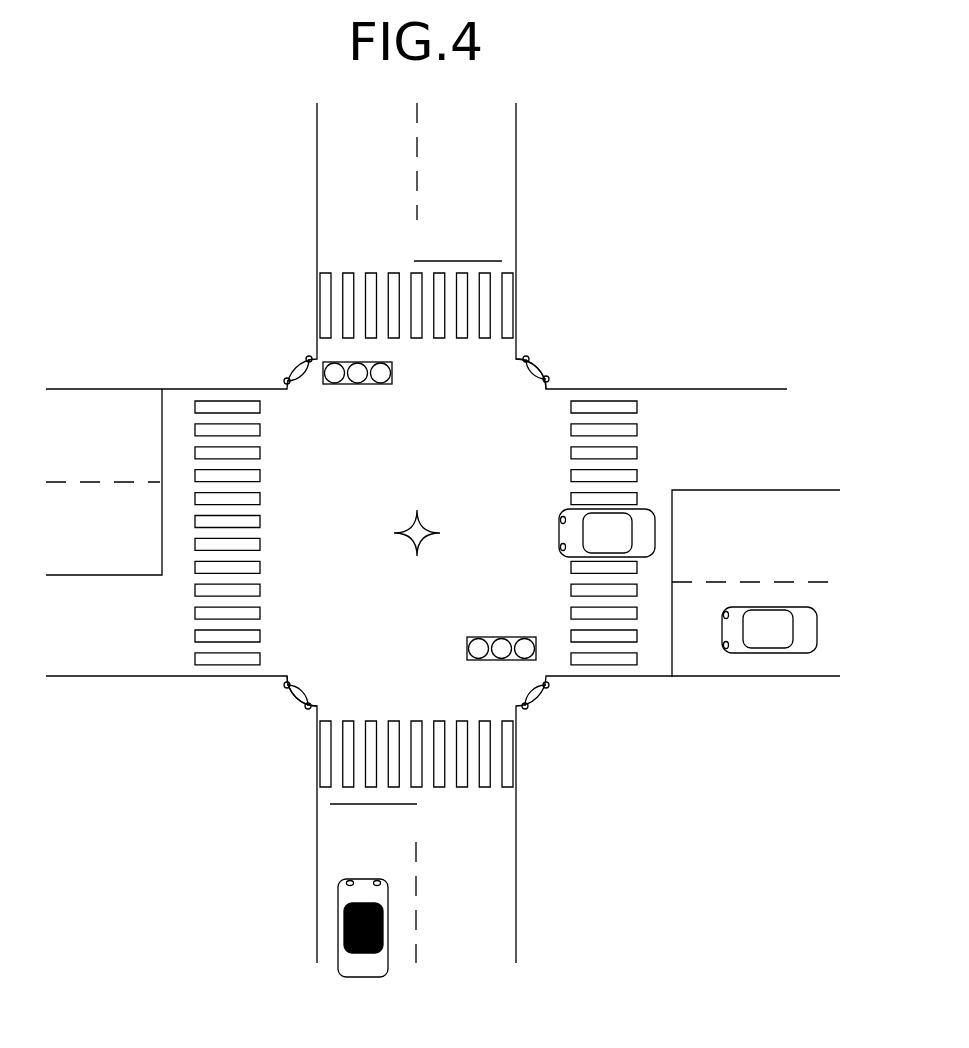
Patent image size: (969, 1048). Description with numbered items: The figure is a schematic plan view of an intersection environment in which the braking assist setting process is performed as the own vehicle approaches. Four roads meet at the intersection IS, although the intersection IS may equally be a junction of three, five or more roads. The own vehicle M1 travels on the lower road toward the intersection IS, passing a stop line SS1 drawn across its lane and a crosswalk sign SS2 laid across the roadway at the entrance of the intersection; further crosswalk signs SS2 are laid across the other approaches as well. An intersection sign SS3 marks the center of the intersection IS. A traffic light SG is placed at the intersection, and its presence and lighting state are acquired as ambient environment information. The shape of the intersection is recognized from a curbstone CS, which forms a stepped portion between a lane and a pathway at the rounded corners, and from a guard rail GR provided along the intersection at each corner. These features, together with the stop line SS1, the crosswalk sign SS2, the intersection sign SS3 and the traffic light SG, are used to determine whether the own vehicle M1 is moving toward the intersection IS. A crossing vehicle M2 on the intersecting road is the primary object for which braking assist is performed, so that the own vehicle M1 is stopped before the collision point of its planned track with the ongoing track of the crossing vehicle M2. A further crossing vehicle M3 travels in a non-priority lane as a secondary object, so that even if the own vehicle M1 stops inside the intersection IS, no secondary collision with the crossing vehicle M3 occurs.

The stop line SS1 is at (352, 805).
The crosswalk sign SS2 is at (327, 273).
The intersection sign SS3 is at (458, 533).
The intersection IS is at (378, 570).
The guard rail GR is at (298, 375).
The curbstone CS is at (523, 377).
The traffic light SG is at (392, 373).
The own vehicle M1 is at (365, 969).
The crossing vehicle M2 is at (642, 507).
The crossing vehicle M3 is at (800, 633).